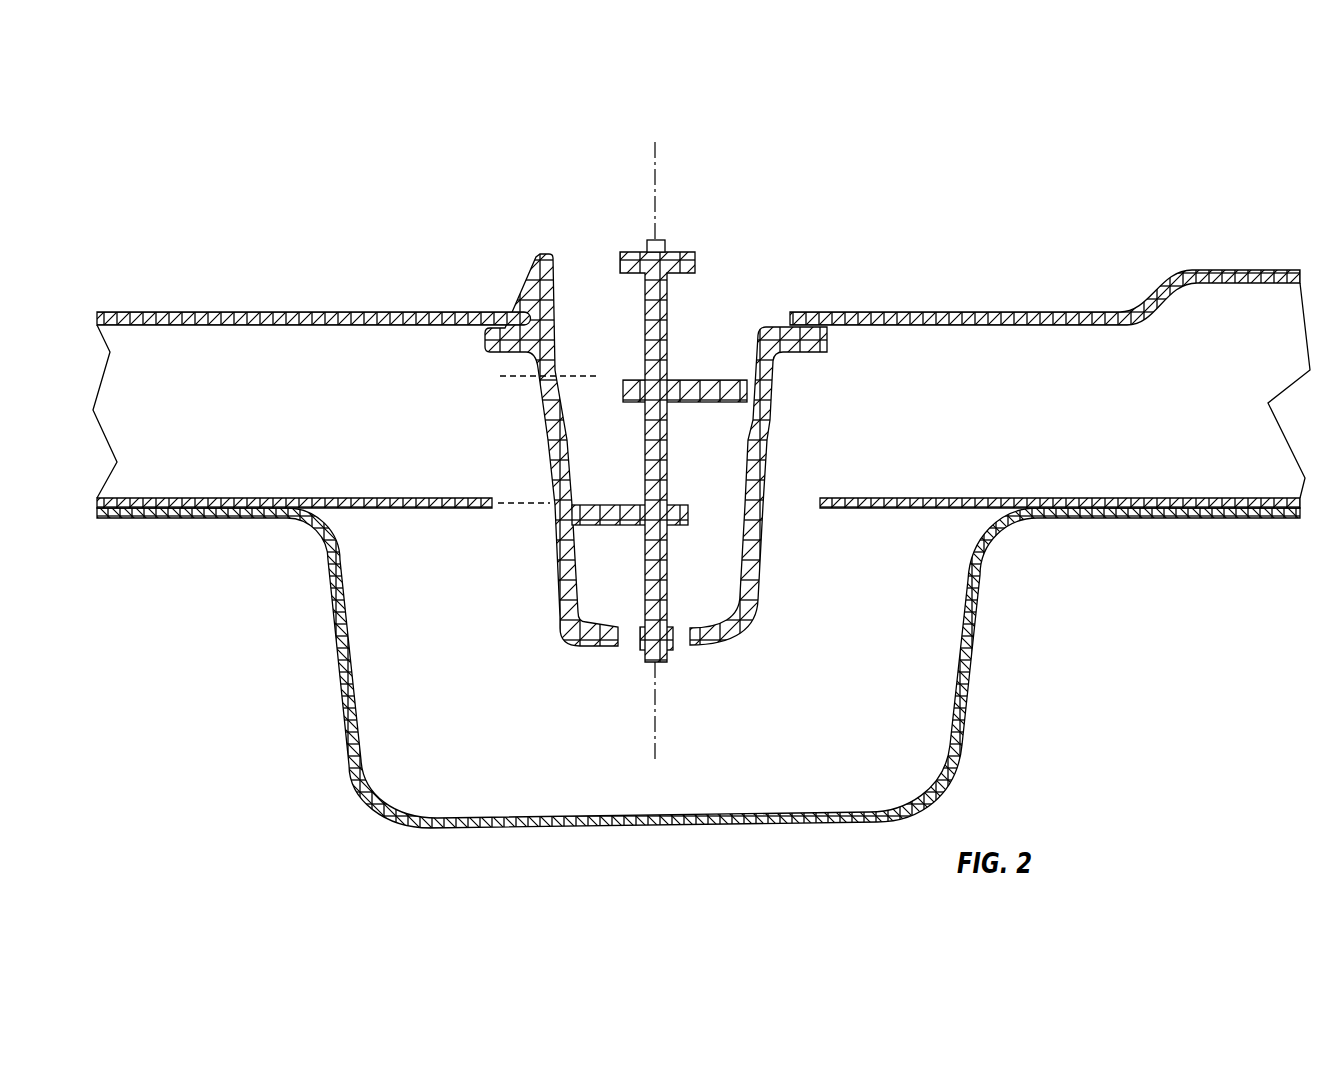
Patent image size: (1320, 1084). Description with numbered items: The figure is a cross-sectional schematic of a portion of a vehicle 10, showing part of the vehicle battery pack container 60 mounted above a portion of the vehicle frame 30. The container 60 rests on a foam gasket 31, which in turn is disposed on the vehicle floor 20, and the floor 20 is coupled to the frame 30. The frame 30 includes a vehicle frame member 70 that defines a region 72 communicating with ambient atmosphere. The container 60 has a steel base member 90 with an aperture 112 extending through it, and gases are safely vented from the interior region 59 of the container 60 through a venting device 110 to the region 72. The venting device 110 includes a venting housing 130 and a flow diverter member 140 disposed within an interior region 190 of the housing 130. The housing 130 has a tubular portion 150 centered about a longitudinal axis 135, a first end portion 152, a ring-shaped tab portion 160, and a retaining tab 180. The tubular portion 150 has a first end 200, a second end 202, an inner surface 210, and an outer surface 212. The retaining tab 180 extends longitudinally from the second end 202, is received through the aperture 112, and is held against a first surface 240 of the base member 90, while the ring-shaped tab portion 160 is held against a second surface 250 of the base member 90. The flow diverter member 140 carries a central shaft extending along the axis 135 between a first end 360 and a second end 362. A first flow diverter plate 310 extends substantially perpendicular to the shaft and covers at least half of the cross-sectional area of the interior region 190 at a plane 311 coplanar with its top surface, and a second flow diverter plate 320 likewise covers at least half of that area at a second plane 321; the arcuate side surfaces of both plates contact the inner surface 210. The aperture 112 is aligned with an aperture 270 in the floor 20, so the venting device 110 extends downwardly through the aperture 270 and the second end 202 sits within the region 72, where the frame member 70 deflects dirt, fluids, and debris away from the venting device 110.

The vehicle 10 is at (1022, 214).
The vehicle floor 20 is at (318, 514).
The vehicle frame 30 is at (977, 691).
The foam gasket 31 is at (317, 366).
The interior region 59 is at (731, 196).
The vehicle battery pack container 60 is at (243, 311).
The vehicle frame member 70 is at (815, 818).
The region 72 is at (583, 788).
The base member 90 is at (418, 311).
The venting device 110 is at (879, 431).
The aperture 112 is at (787, 313).
The venting housing 130 is at (771, 443).
The longitudinal axis 135 is at (655, 153).
The flow diverter member 140 is at (673, 315).
The tubular portion 150 is at (767, 489).
The first end portion 152 is at (710, 646).
The ring-shaped tab portion 160 is at (830, 338).
The retaining tab 180 is at (540, 259).
The interior region 190 is at (603, 443).
The first end 200 is at (753, 606).
The second end 202 is at (778, 355).
The inner surface 210 is at (580, 590).
The outer surface 212 is at (556, 549).
The first surface 240 is at (474, 312).
The second surface 250 is at (983, 326).
The aperture 270 is at (822, 506).
The first flow diverter plate 310 is at (614, 527).
The plane 311 is at (518, 502).
The second flow diverter plate 320 is at (717, 403).
The second plane 321 is at (498, 376).
The first end 360 is at (669, 276).
The second end 362 is at (668, 629).